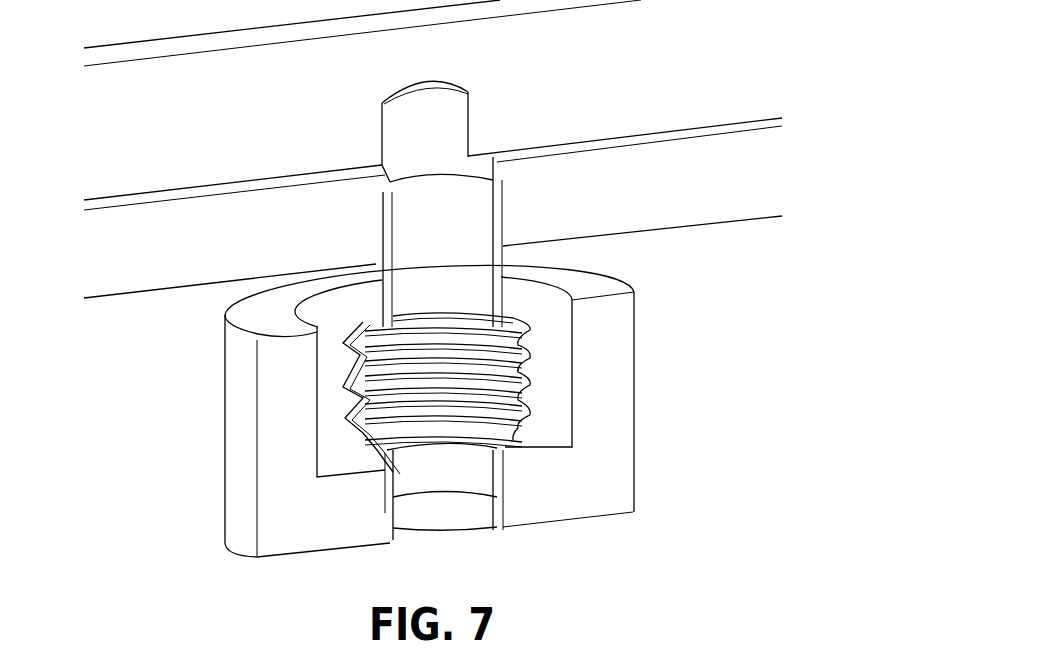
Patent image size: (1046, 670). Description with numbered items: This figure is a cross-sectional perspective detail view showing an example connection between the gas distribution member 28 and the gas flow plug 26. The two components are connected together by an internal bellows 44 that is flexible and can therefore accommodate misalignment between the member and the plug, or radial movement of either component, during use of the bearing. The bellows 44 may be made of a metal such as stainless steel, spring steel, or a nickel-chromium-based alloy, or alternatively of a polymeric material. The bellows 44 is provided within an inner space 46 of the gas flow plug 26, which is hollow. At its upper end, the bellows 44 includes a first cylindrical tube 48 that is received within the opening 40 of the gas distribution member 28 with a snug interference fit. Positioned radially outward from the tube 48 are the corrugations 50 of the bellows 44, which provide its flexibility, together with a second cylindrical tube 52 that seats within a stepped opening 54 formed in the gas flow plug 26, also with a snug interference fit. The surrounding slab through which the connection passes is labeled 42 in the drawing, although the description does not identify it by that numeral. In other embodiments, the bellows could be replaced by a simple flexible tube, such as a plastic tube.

The gas flow plug 26 is at (651, 492).
The gas distribution member 28 is at (722, 72).
The opening 40 is at (458, 115).
The panel 42 is at (206, 135).
The internal bellows 44 is at (553, 381).
The inner space 46 is at (543, 425).
The first cylindrical tube 48 is at (491, 203).
The corrugations 50 is at (343, 352).
The second cylindrical tube 52 is at (493, 470).
The stepped opening 54 is at (468, 505).